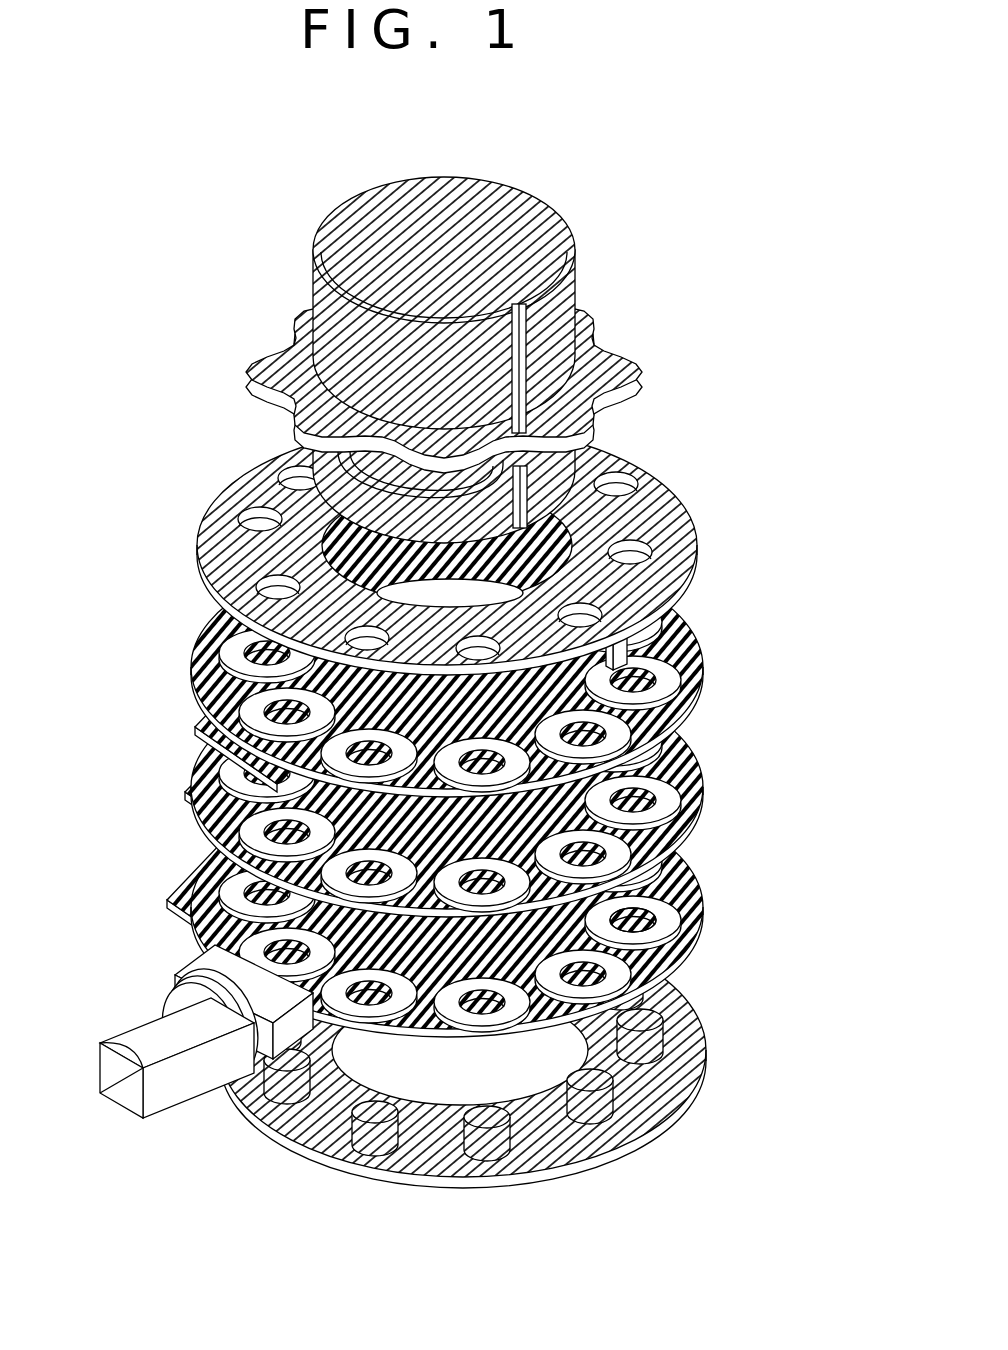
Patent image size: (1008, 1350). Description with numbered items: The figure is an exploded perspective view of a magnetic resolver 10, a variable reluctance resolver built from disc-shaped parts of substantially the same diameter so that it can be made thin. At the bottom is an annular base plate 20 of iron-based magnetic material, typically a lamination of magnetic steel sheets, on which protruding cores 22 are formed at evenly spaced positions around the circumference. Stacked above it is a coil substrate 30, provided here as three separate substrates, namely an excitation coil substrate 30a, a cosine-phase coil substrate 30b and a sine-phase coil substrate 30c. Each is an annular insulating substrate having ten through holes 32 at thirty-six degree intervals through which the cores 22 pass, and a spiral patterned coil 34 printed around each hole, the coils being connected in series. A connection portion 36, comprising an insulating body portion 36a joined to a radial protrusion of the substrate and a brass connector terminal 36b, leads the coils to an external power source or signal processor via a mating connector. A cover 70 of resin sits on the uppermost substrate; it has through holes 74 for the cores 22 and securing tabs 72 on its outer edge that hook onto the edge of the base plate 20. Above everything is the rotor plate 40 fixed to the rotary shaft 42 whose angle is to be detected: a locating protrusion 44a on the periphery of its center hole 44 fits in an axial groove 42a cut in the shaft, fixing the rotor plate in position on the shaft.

The magnetic resolver 10 is at (171, 174).
The base plate 20 is at (498, 1090).
The cores 22 is at (497, 1148).
The coil substrate 30 is at (519, 781).
The excitation coil substrate 30a is at (489, 903).
The cosine-phase coil substrate 30b is at (700, 778).
The sine-phase coil substrate 30c is at (500, 661).
The through holes 32 is at (645, 910).
The patterned coil 34 is at (684, 909).
The connection portion 36 is at (164, 1008).
The body portion 36a is at (217, 967).
The connector terminal 36b is at (134, 1032).
The rotor plate 40 is at (452, 360).
The rotary shaft 42 is at (500, 305).
The groove 42a is at (528, 310).
The center hole 44 is at (296, 394).
The locating protrusion 44a is at (604, 418).
The cover 70 is at (497, 550).
The securing tabs 72 is at (698, 597).
The through holes 74 is at (624, 482).